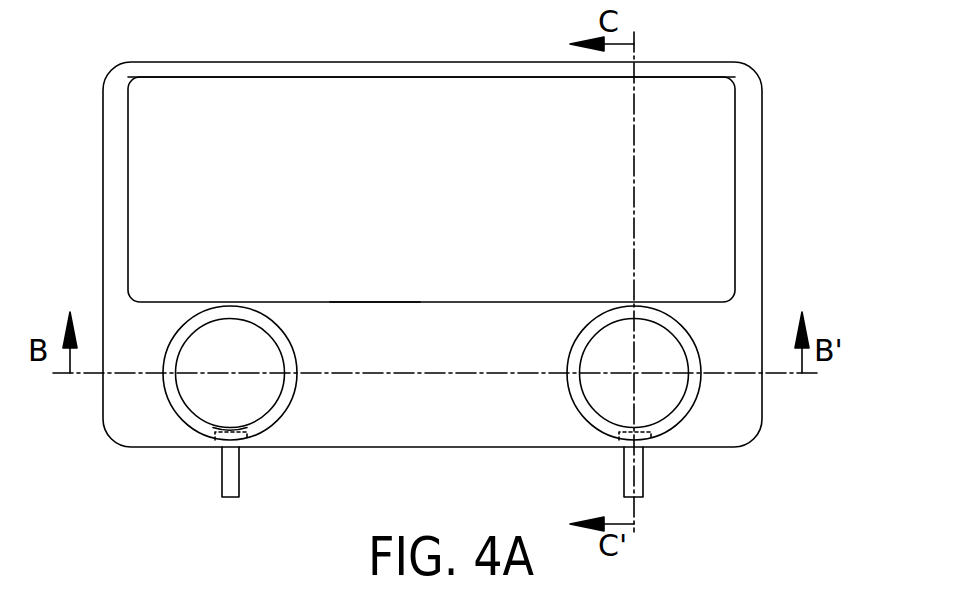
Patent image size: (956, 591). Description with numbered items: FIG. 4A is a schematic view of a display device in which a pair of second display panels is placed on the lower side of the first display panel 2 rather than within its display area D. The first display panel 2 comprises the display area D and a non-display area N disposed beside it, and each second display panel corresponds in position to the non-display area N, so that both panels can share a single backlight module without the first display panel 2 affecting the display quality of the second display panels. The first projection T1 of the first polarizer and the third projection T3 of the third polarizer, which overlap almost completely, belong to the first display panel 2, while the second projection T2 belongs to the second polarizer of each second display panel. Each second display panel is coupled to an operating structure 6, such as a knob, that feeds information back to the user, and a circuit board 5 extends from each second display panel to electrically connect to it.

The non-display area N is at (153, 62).
The display area D is at (183, 77).
The first display panel 2 is at (424, 95).
The circuit board 5 is at (222, 489).
The operating structure 6 is at (198, 427).
The first projection T1 is at (378, 404).
The third projection T3 is at (373, 302).
The second projection T2 is at (258, 412).